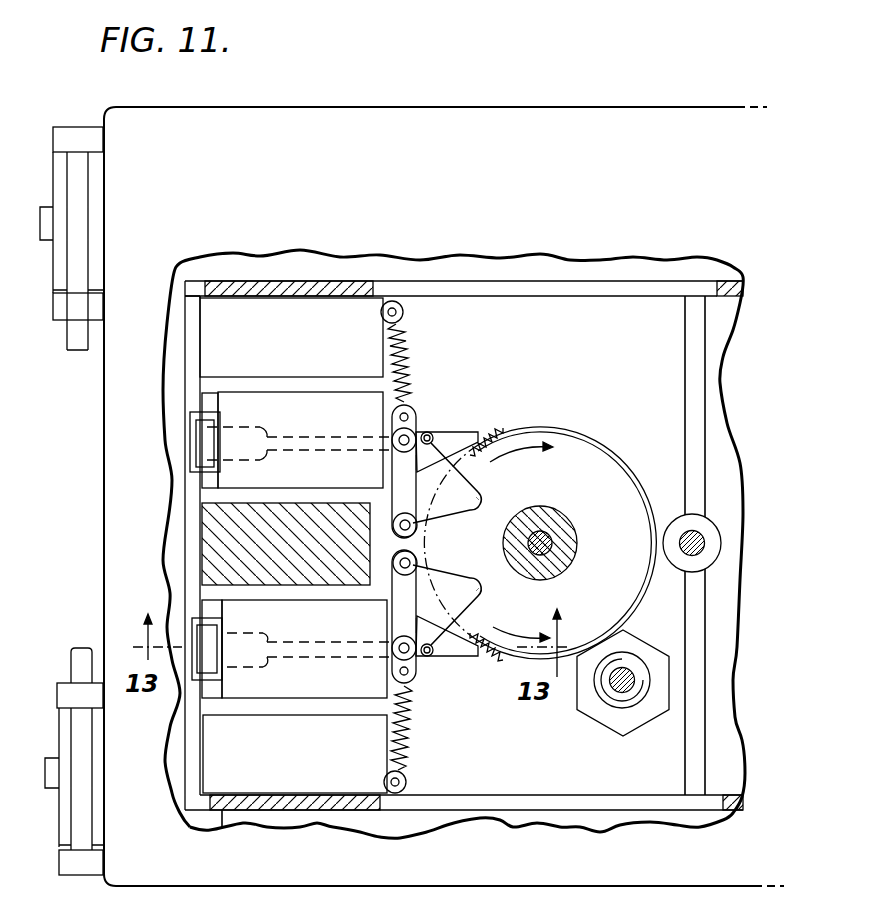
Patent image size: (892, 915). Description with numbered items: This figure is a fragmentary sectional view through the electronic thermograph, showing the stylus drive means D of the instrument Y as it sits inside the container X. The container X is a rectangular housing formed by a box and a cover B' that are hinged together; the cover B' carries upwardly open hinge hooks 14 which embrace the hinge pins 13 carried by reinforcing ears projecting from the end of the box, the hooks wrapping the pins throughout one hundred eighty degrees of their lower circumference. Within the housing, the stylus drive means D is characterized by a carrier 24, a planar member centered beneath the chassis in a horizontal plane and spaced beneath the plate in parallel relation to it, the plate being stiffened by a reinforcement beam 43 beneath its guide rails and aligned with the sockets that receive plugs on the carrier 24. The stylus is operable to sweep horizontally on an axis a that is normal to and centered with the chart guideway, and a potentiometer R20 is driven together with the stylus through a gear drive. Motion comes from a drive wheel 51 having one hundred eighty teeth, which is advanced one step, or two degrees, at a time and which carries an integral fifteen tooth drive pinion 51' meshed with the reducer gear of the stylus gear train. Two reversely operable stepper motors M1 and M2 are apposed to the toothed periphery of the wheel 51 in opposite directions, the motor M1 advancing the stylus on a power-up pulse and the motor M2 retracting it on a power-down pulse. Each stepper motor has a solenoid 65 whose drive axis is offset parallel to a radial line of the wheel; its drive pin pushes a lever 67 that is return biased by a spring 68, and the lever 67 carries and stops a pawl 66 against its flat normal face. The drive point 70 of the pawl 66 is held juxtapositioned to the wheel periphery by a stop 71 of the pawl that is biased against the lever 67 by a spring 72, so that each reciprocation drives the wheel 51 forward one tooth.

The hinge hooks 14 is at (62, 253).
The hinge pins 13 is at (80, 819).
The carrier 24 is at (464, 554).
The reinforcement beam 43 is at (611, 288).
The drive wheel 51 is at (540, 535).
The drive pinion 51' is at (559, 543).
The solenoid 65 is at (275, 402).
The pawl 66 is at (478, 428).
The lever 67 is at (430, 480).
The spring 68 is at (412, 357).
The drive point 70 is at (485, 432).
The stop 71 is at (416, 463).
The spring 72 is at (482, 494).
The axis a is at (708, 545).
The potentiometer R20 is at (601, 702).
The stylus drive means D is at (527, 408).
The container X is at (99, 393).
The instrument Y is at (394, 281).
The cover B' is at (299, 181).
The stepper motor M1 is at (291, 442).
The stepper motor M2 is at (292, 646).